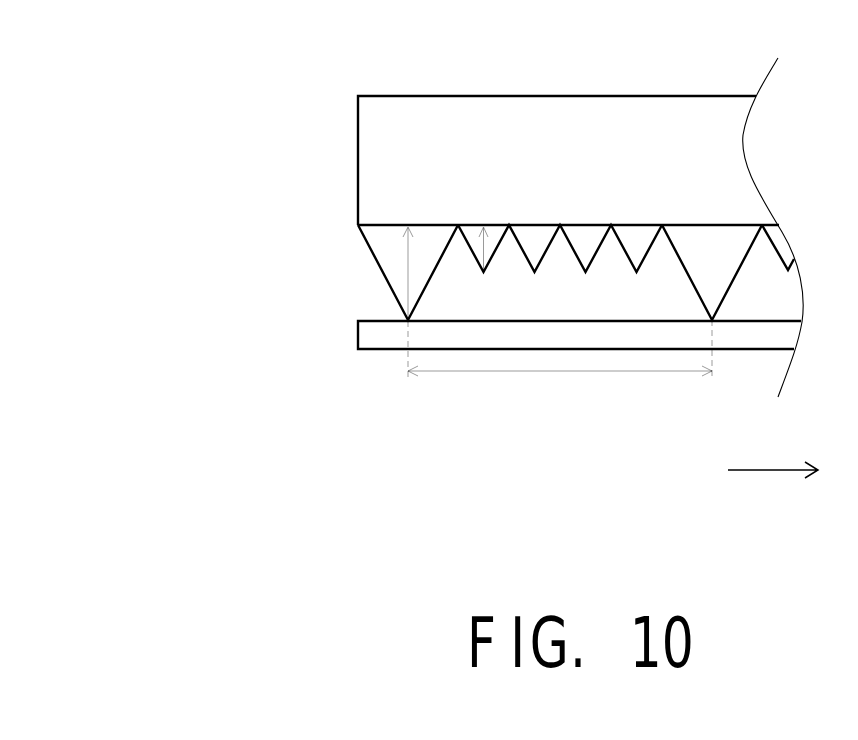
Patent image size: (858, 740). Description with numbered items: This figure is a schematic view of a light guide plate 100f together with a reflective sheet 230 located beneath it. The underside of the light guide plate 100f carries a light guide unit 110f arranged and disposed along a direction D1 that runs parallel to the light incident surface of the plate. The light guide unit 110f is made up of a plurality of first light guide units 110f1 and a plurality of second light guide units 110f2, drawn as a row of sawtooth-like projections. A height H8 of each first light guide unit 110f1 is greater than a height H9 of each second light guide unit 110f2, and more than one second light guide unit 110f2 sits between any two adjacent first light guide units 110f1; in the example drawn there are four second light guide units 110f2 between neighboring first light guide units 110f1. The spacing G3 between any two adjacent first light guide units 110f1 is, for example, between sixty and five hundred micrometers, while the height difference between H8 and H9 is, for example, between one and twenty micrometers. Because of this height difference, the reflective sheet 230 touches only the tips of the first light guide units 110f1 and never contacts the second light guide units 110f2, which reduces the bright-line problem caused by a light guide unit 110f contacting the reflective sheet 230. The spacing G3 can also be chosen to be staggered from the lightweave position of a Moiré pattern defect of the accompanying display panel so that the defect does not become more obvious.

The light guide plate 100f is at (635, 123).
The light guide unit 110f is at (457, 171).
The first light guide unit 110f1 is at (387, 240).
The second light guide unit 110f2 is at (476, 233).
The height of the first light guide unit H8 is at (395, 277).
The height of the second light guide unit H9 is at (487, 243).
The reflective sheet 230 is at (368, 333).
The spacing between adjacent first light guide units G3 is at (560, 367).
The direction D1 is at (773, 488).